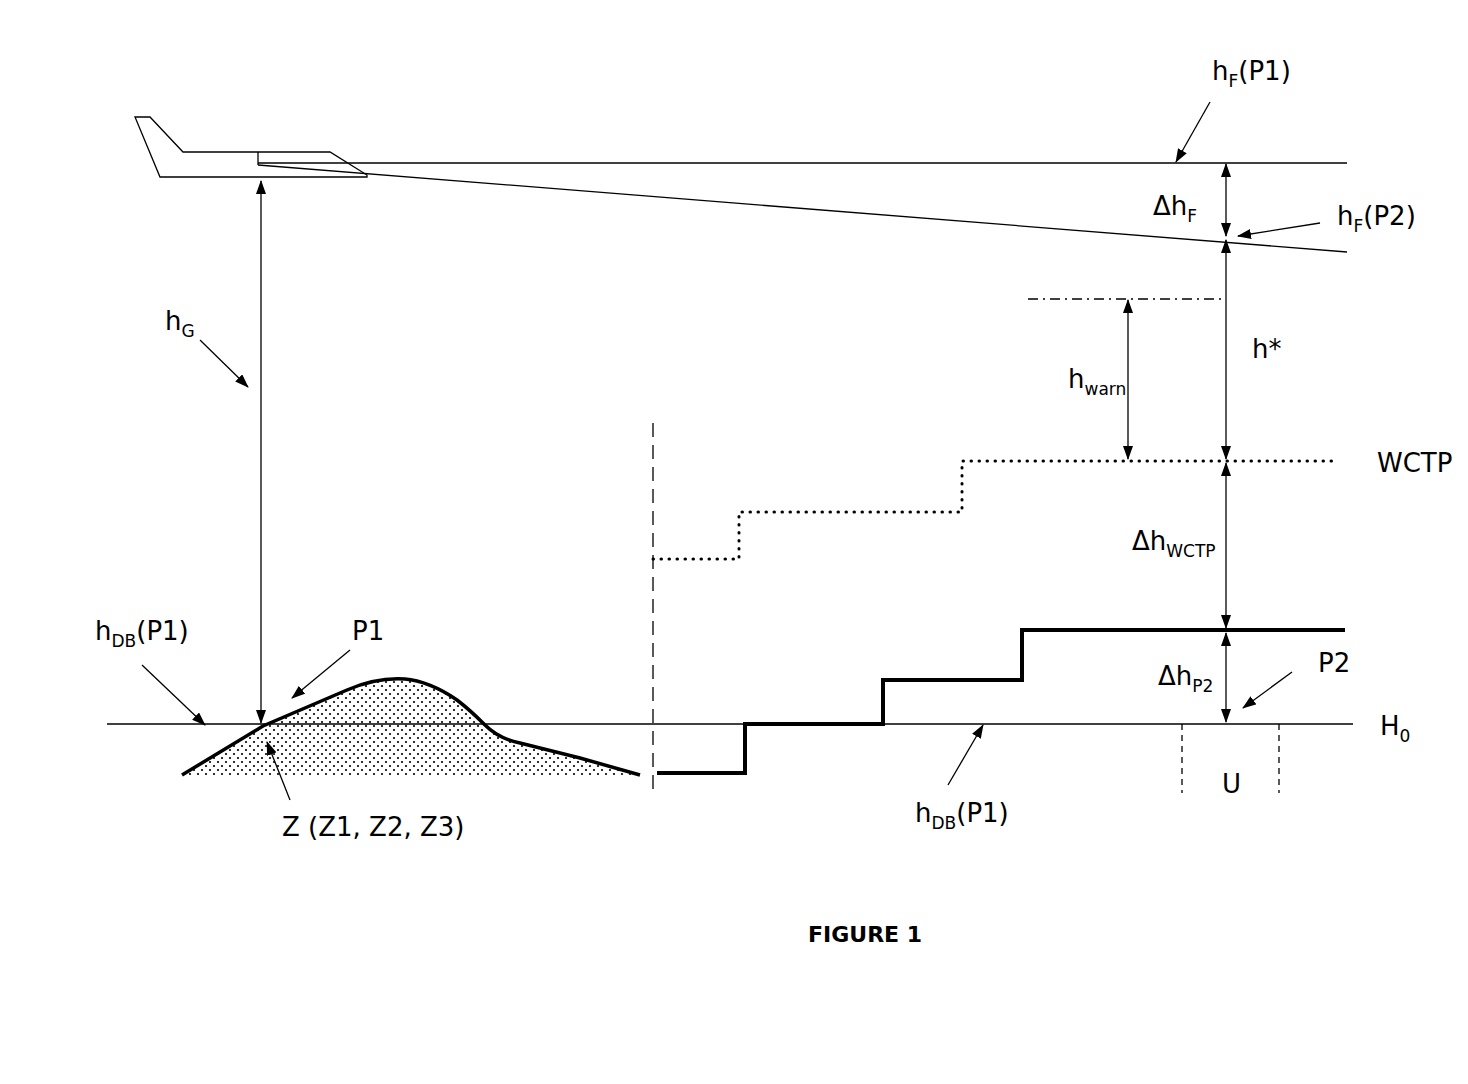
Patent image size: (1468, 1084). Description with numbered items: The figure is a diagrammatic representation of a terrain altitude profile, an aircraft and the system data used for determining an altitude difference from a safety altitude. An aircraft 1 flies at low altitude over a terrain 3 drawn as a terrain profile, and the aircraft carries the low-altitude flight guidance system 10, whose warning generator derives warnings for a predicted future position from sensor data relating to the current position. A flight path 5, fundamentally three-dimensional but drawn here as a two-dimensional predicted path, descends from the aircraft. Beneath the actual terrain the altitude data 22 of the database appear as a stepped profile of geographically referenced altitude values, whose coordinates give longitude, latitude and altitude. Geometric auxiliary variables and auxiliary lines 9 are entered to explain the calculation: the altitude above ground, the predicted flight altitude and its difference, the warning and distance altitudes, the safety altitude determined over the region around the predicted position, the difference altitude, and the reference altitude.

The aircraft 1 is at (235, 150).
The low-altitude flight guidance system 10 is at (259, 160).
The flight path 5 is at (807, 217).
The terrain 3 is at (433, 673).
The altitude data 22 is at (755, 738).
The geometric auxiliary variables/auxiliary lines 9 is at (1155, 762).